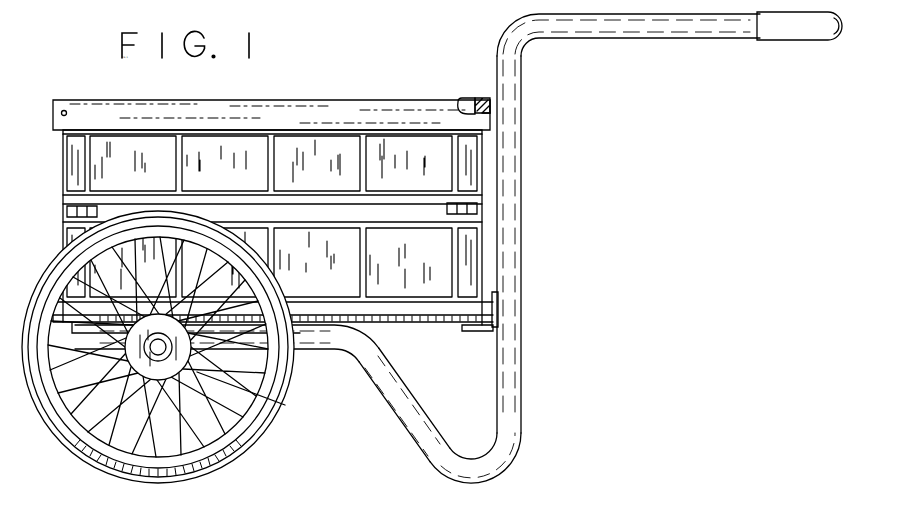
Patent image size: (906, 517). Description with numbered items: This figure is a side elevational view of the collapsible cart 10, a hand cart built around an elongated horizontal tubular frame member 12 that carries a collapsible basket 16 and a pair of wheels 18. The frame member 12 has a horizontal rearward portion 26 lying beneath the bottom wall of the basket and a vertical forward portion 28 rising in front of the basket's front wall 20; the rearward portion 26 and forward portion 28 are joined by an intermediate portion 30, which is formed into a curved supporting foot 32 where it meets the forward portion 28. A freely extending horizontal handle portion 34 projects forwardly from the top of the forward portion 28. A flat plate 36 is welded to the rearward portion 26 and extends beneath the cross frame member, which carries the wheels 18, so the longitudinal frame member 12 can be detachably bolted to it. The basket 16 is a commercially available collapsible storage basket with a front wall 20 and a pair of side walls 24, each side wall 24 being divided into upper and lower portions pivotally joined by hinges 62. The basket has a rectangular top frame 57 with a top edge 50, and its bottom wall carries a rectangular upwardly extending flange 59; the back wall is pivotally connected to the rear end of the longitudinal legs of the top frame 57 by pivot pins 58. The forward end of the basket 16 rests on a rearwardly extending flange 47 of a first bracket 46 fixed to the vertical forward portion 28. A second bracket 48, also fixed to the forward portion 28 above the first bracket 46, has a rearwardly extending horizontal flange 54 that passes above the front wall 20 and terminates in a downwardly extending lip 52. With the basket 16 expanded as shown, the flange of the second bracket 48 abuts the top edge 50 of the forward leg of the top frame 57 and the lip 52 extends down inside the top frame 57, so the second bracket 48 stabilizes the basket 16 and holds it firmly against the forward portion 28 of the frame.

The collapsible cart 10 is at (388, 61).
The horizontal tubular frame member 12 is at (458, 251).
The collapsible basket 16 is at (309, 90).
The wheels 18 is at (258, 436).
The front wall 20 is at (296, 251).
The side walls 24 is at (473, 167).
The horizontal rearward portion 26 is at (337, 342).
The vertical forward portion 28 is at (516, 262).
The intermediate portion 30 is at (408, 425).
The curved supporting foot 32 is at (508, 468).
The horizontal handle portion 34 is at (707, 32).
The flat plate 36 is at (280, 395).
The first bracket 46 is at (496, 308).
The rearwardly extending flange 47 is at (478, 331).
The second bracket 48 is at (493, 109).
The top edge 50 is at (479, 97).
The downwardly extending lip 52 is at (462, 101).
The horizontal flange 54 is at (490, 99).
The rectangular top frame 57 is at (306, 112).
The pivot pins 58 is at (65, 110).
The rectangular upwardly extending flange 59 is at (412, 319).
The hinges 62 is at (70, 207).